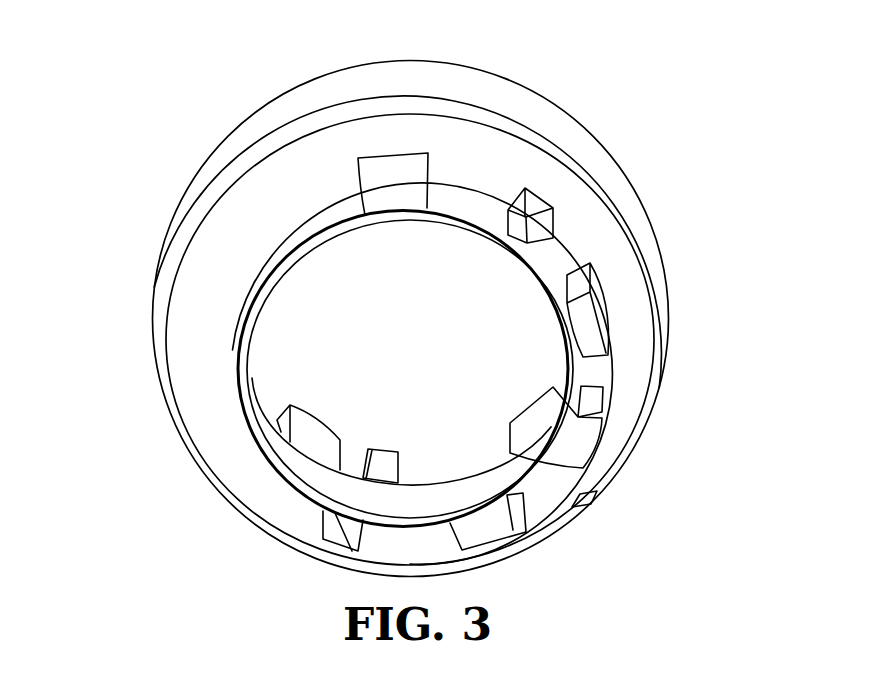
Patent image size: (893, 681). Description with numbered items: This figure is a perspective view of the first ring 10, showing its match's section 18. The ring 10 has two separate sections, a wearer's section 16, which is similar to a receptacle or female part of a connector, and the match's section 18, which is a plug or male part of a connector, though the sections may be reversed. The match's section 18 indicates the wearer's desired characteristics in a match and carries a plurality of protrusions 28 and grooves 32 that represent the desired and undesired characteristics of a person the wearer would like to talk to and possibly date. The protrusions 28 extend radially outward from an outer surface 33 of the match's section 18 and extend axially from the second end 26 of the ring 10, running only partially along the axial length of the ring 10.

The first ring 10 is at (436, 310).
The wearer's section 16 is at (628, 192).
The match's section 18 is at (388, 497).
The second end 26 is at (526, 484).
The protrusions 28 is at (393, 197).
The grooves 32 is at (478, 173).
The outer surface 33 is at (262, 268).